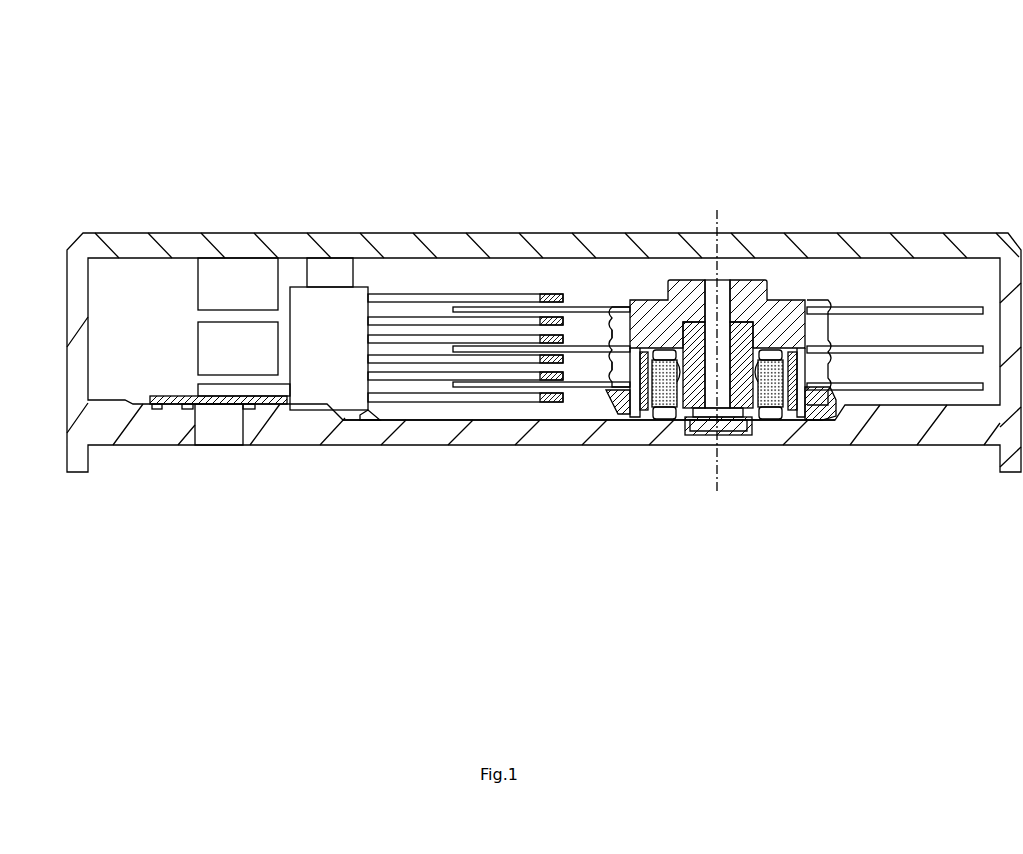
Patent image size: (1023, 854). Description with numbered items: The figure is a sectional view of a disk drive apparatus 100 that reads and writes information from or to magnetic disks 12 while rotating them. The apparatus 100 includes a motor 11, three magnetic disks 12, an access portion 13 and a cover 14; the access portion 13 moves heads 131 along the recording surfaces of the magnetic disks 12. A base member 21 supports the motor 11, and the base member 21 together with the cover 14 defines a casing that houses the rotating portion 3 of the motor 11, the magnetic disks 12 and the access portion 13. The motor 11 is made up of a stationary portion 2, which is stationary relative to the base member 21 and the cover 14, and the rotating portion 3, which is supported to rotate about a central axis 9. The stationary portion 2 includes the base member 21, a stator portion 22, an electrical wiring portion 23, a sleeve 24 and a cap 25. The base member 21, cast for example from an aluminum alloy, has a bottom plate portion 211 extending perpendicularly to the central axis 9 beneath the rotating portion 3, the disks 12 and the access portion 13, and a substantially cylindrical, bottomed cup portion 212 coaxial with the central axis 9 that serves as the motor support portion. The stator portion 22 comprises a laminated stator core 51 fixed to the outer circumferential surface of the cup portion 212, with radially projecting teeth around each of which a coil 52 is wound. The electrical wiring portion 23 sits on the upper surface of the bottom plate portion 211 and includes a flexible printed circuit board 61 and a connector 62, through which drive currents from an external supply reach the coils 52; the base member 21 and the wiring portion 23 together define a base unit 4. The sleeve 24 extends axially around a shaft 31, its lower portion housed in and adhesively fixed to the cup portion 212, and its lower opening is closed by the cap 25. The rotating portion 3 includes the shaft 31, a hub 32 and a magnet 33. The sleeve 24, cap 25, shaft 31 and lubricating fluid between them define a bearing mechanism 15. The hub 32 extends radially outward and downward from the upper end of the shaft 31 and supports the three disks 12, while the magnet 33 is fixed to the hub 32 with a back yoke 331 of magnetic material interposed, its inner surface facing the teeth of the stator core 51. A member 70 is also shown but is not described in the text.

The disk drive apparatus 100 is at (160, 115).
The cover 14 is at (172, 233).
The access portion 13 is at (408, 281).
The heads 131 is at (553, 290).
The motor 11 is at (635, 279).
The rotating portion 3 is at (678, 271).
The central axis 9 is at (714, 212).
The shaft 31 is at (727, 290).
The hub 32 is at (757, 340).
The bearing mechanism 15 is at (806, 330).
The magnetic disks 12 is at (903, 306).
The heat transfer member 70 is at (211, 446).
The connector 62 is at (258, 407).
The flexible printed circuit board 61 is at (380, 422).
The electrical wiring portion 23 is at (265, 463).
The base unit 4 is at (470, 455).
The bottom plate portion 211 is at (677, 492).
The cup portion 212 is at (680, 406).
The base member 21 is at (589, 472).
The stationary portion 2 is at (755, 358).
The sleeve 24 is at (707, 418).
The cap 25 is at (740, 432).
The coils 52 is at (770, 406).
The stator core 51 is at (790, 412).
The stator portion 22 is at (727, 434).
The magnet 33 is at (798, 408).
The back yoke 331 is at (830, 406).